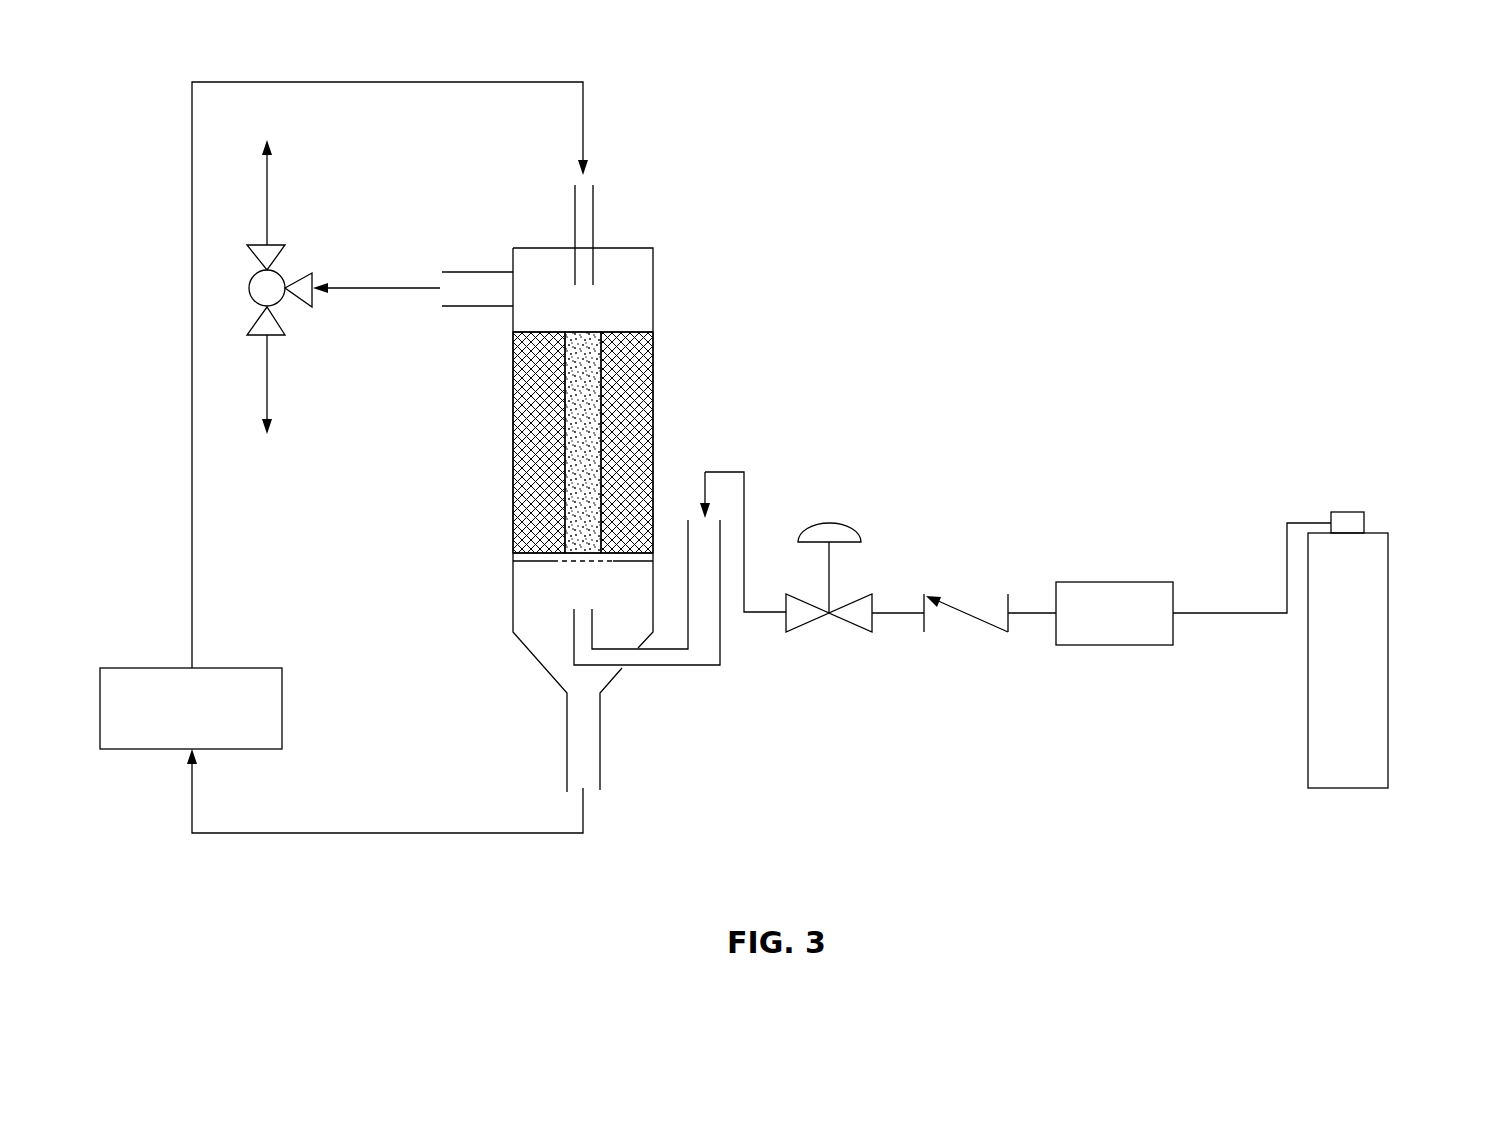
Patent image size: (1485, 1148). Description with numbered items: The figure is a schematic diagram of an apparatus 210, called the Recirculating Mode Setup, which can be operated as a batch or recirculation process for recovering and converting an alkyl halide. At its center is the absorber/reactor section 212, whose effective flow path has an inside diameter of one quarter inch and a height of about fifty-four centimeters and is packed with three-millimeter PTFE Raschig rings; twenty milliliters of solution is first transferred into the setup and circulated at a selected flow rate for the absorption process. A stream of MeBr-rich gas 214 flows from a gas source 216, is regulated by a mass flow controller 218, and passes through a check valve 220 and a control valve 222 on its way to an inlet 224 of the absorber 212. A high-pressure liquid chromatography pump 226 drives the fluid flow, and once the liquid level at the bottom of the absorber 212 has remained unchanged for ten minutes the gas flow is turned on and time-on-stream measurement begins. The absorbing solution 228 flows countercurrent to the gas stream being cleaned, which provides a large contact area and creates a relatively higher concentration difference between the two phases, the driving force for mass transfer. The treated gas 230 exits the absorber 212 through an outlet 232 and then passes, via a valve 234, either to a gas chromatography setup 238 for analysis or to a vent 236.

The apparatus 210 is at (1110, 142).
The absorber/reactor section 212 is at (582, 332).
The MeBr-rich gas stream 214 is at (1228, 615).
The gas source 216 is at (1380, 660).
The mass flow controller 218 is at (1113, 582).
The check valve 220 is at (985, 625).
The control valve 222 is at (815, 620).
The inlet 224 is at (673, 667).
The high-pressure liquid chromatography pump 226 is at (283, 710).
The absorbing solution 228 is at (264, 80).
The gas 230 is at (376, 285).
The outlet 232 is at (472, 308).
The valve 234 is at (313, 300).
The vent 236 is at (267, 191).
The gas chromatography setup 238 is at (266, 385).